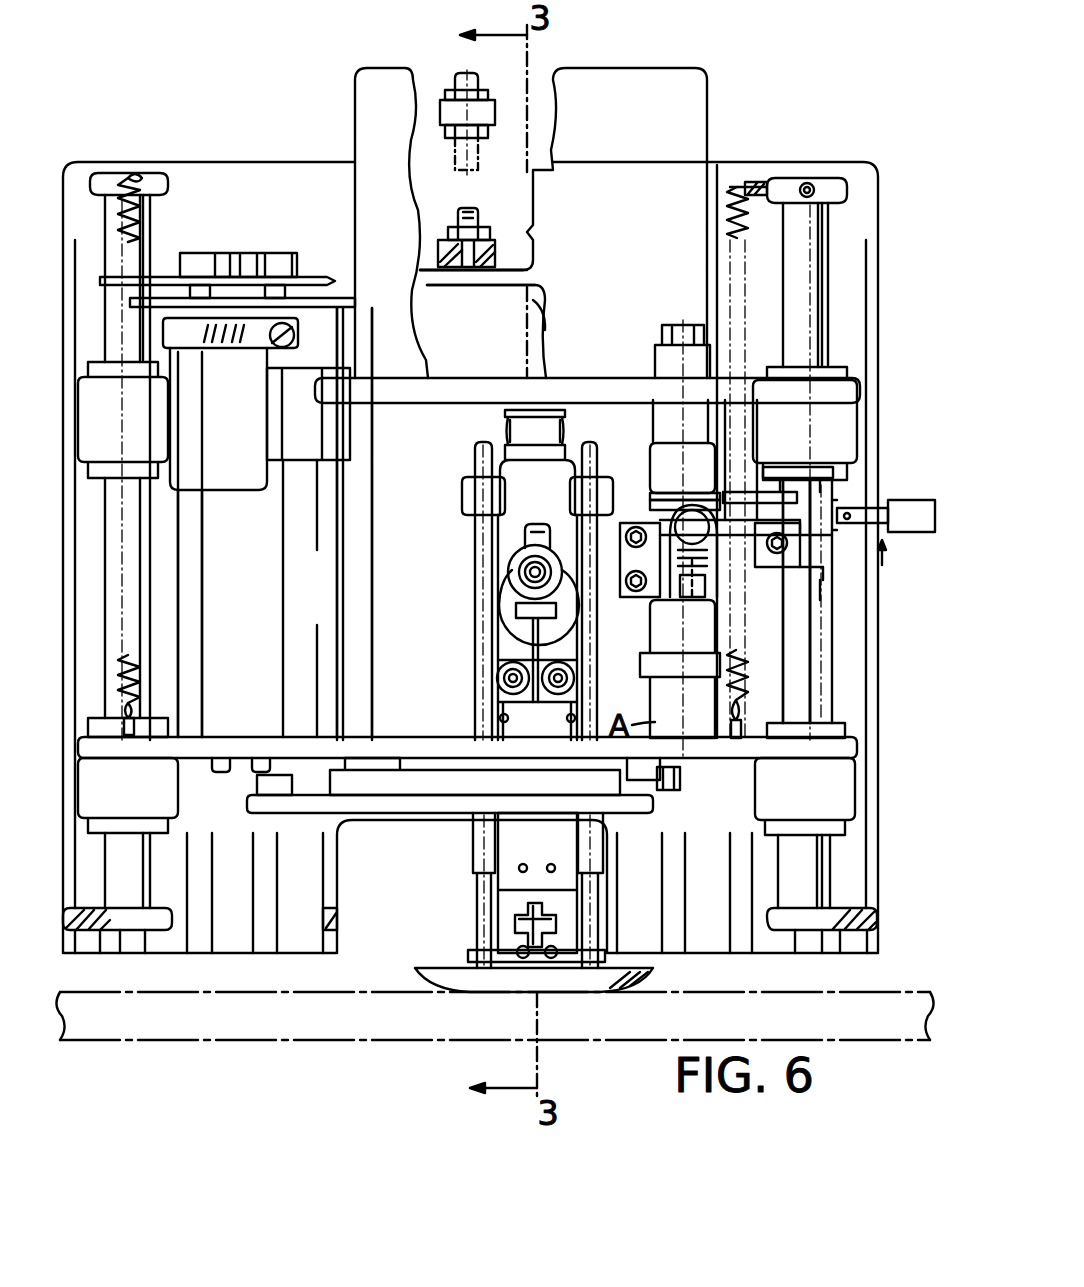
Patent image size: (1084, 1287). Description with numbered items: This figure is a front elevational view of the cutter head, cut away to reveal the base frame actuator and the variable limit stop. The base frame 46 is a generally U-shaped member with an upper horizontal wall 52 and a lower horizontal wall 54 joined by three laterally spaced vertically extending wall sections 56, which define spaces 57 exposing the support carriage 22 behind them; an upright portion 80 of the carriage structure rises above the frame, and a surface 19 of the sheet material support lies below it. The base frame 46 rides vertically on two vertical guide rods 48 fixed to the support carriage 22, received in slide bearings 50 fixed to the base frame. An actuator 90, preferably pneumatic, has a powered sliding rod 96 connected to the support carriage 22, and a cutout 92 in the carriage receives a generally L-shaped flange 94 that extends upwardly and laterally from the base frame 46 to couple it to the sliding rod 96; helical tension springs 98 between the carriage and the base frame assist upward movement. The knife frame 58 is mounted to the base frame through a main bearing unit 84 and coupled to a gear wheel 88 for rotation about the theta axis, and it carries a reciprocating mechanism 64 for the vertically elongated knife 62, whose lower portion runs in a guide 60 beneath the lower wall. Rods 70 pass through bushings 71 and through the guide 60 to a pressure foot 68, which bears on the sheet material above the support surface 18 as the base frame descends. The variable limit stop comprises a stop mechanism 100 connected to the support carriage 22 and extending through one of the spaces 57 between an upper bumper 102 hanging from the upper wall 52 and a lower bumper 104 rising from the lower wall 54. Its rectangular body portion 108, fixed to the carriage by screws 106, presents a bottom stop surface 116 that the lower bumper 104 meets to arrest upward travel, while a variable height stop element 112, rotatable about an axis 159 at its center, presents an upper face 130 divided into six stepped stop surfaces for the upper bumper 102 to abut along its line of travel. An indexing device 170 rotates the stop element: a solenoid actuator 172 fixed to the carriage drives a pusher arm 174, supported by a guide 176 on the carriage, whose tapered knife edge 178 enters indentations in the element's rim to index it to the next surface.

The support carriage 22 is at (288, 170).
The upper horizontal wall 52 is at (418, 378).
The right upright 80 is at (700, 125).
The cutout 92 is at (533, 226).
The actuator 90 is at (543, 345).
The sliding rod 96 is at (475, 225).
The L-shaped flange 94 is at (438, 255).
The base frame 46 is at (590, 378).
The vertical guide rods 48 is at (105, 245).
The helical tension springs 98 is at (150, 214).
The slide bearings 50 is at (168, 410).
The vertically extending wall sections 56 is at (180, 590).
The spaces 57 is at (185, 666).
The lower horizontal wall 54 is at (428, 737).
The knife frame 58 is at (500, 540).
The reciprocating mechanism 64 is at (512, 640).
The bushings 71 is at (520, 520).
The upper bumper 102 is at (657, 450).
The axis 159 is at (685, 471).
The stop mechanism 100 is at (642, 492).
The variable height stop element 112 is at (660, 506).
The upper face 130 is at (770, 468).
The body portion 108 is at (628, 597).
The bottom stop surface 116 is at (735, 600).
The screws 106 is at (770, 560).
The tapered knife edge 178 is at (806, 569).
The lower bumper 104 is at (650, 700).
The guide 176 is at (835, 535).
The solenoid actuator 172 is at (870, 508).
The pusher arm 174 is at (868, 508).
The indexing device 170 is at (907, 562).
The gear wheel 88 is at (486, 818).
The main bearing unit 84 is at (660, 780).
The rods 70 is at (477, 928).
The guide 60 is at (520, 847).
The knife 62 is at (540, 1005).
The pressure foot 68 is at (422, 968).
The support surface 18 is at (797, 992).
The rail surface 19 is at (735, 1005).